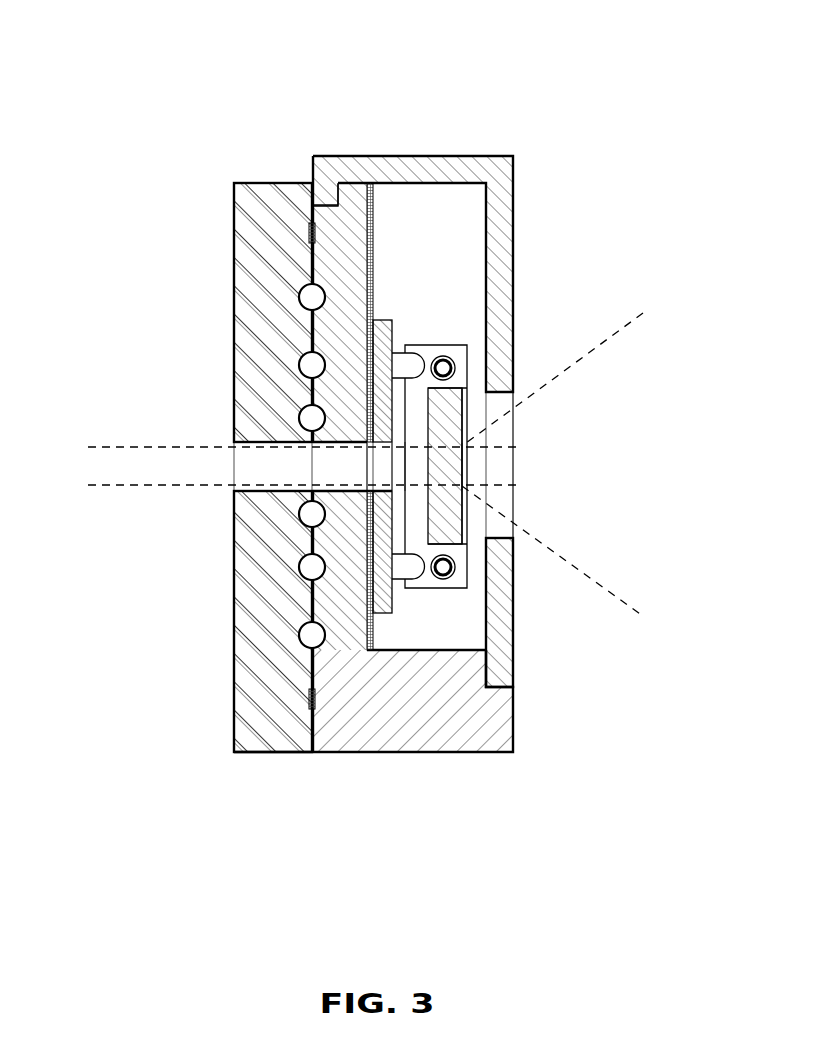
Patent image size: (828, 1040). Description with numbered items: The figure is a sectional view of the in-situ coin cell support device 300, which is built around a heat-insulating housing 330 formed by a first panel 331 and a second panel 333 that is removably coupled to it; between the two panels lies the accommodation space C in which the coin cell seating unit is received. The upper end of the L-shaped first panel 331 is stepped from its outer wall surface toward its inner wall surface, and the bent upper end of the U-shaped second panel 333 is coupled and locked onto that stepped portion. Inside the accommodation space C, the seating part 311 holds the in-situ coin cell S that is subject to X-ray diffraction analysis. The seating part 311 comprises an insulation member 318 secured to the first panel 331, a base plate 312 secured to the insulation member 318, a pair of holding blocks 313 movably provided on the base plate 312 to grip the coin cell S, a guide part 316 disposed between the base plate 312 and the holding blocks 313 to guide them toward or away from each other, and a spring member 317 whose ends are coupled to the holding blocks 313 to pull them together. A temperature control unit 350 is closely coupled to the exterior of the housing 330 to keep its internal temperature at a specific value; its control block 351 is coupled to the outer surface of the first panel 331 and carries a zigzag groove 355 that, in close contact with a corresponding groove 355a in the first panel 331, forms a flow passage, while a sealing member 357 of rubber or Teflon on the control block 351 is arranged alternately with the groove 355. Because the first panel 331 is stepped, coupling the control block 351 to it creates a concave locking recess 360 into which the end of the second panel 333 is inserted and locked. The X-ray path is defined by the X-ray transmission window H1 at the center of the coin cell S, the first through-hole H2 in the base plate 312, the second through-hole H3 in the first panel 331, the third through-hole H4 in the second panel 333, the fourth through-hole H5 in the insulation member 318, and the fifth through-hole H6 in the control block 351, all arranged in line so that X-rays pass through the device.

The in-situ coin cell support device 300 is at (76, 58).
The seating part 311 is at (670, 88).
The insulation member 318 is at (372, 211).
The base plate 312 is at (384, 320).
The guide part 316 is at (402, 352).
The holding block 313 is at (437, 344).
The spring member 317 is at (450, 356).
The in-situ coin cell S is at (457, 408).
The housing 330 is at (552, 834).
The first panel 331 is at (363, 728).
The second panel 333 is at (507, 632).
The temperature control unit 350 is at (222, 712).
The control block 351 is at (237, 285).
The groove 355 is at (300, 355).
The groove 355a is at (312, 351).
The sealing member 357 is at (310, 232).
The locking recess 360 is at (313, 215).
The X-ray transmission window H1 is at (457, 467).
The first through-hole H2 is at (387, 485).
The second through-hole H3 is at (336, 441).
The third through-hole H4 is at (500, 437).
The fourth through-hole H5 is at (367, 490).
The fifth through-hole H6 is at (277, 490).
The accommodation space C is at (470, 612).